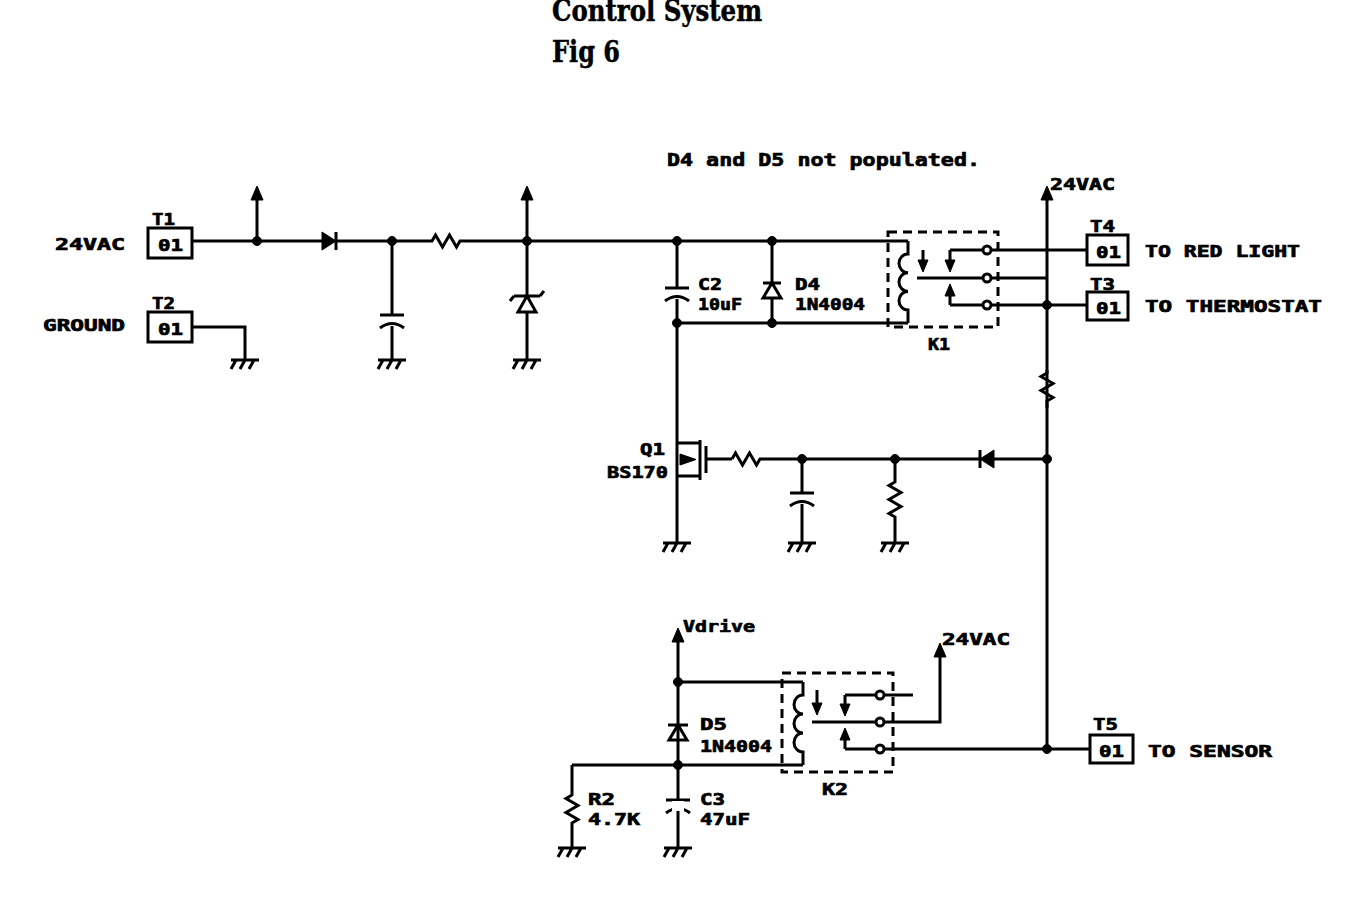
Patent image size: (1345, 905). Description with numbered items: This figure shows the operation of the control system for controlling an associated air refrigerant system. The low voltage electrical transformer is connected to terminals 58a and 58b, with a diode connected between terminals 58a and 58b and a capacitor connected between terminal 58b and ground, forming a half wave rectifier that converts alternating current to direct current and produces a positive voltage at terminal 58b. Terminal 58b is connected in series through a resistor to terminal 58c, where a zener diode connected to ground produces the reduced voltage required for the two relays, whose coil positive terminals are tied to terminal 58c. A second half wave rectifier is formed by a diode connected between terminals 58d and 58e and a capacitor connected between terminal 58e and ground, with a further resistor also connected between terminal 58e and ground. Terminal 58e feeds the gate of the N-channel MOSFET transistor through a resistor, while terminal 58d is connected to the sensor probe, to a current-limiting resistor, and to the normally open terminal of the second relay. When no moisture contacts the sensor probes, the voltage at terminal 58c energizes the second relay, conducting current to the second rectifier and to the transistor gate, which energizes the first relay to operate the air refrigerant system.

The terminal 58a is at (305, 195).
The terminal 58b is at (452, 261).
The terminal 58c is at (562, 241).
The terminal 58d is at (1001, 434).
The terminal 58e is at (844, 470).